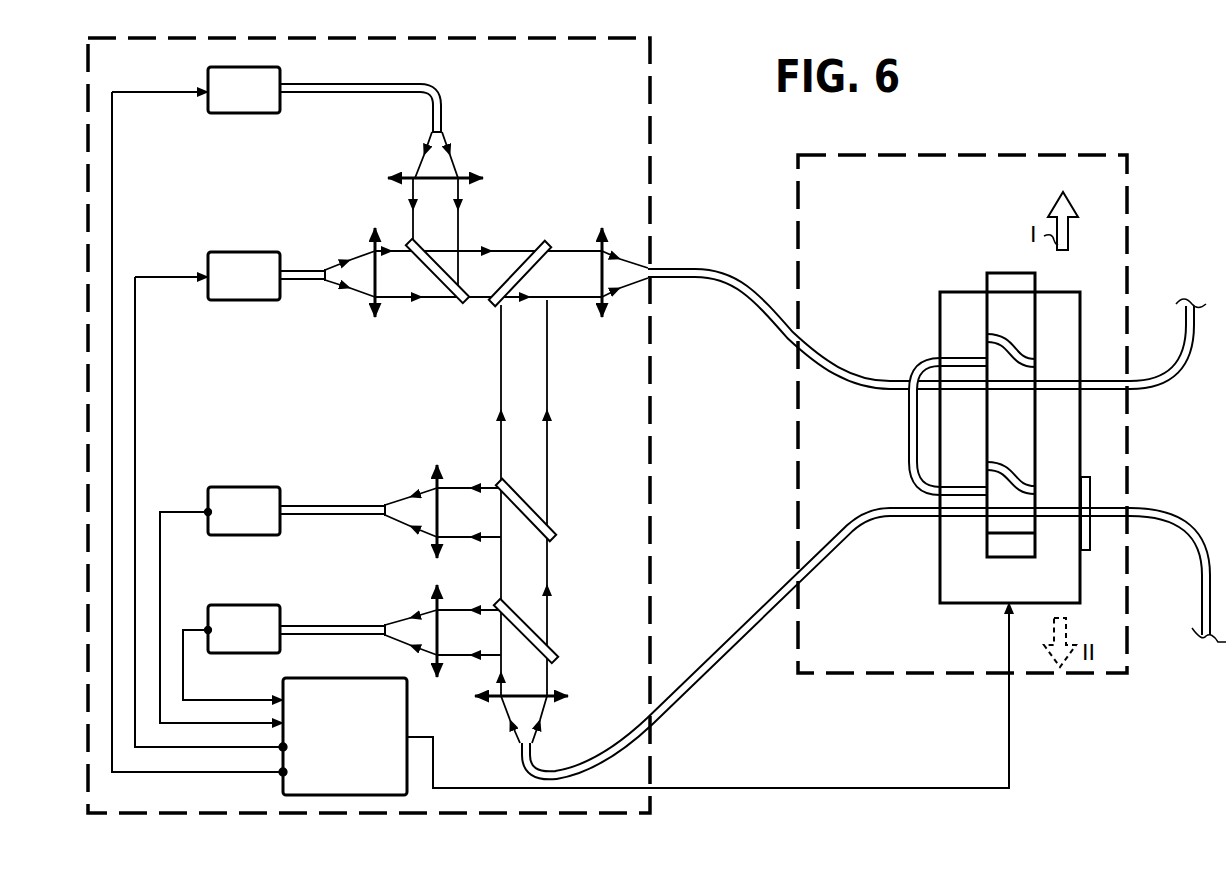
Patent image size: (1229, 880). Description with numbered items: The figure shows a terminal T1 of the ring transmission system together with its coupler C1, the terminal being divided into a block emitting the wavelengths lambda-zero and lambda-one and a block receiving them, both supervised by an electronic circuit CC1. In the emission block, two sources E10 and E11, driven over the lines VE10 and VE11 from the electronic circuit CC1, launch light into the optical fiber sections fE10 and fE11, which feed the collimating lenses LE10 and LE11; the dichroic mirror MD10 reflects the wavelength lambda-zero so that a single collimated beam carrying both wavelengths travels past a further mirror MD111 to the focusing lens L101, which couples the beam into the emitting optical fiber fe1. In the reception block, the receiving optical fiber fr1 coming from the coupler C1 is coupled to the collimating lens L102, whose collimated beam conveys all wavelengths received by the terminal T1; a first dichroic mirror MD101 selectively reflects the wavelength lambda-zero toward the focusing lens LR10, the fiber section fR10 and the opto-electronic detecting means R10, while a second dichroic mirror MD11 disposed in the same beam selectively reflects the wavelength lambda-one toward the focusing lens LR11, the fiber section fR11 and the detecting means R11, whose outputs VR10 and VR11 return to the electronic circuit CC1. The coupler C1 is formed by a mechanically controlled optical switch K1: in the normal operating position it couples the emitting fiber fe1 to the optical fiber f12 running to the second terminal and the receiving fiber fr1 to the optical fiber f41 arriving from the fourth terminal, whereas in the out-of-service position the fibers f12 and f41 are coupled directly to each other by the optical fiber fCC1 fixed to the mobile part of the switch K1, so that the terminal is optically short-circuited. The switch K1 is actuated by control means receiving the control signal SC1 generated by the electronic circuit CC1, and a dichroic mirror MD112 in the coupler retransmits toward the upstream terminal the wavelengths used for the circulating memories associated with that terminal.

The terminal T1 is at (650, 86).
The coupler C1 is at (854, 155).
The source E10 is at (262, 113).
The source E11 is at (262, 252).
The light source control line VE10 is at (186, 94).
The light source control line VE11 is at (196, 278).
The optical fiber section fE10 is at (384, 88).
The optical fiber section fE11 is at (302, 270).
The collimating lens LE10 is at (408, 178).
The collimating lens LE11 is at (368, 286).
The dichroic mirror MD10 is at (438, 288).
The dichroic mirror MD111 is at (528, 252).
The focusing lens L101 is at (598, 286).
The emitting optical fiber fe1 is at (736, 276).
The optical fiber f12 is at (1184, 348).
The opto-electronic detecting means R10 is at (260, 488).
The opto-electronic detecting means R11 is at (260, 606).
The receiver output line VR10 is at (196, 510).
The receiver output line VR11 is at (184, 666).
The optical fiber section fR10 is at (353, 510).
The optical fiber section fR11 is at (353, 630).
The focusing lens LR10 is at (432, 496).
The focusing lens LR11 is at (432, 616).
The dichroic mirror MD101 is at (544, 530).
The dichroic mirror MD11 is at (544, 650).
The collimating lens L102 is at (540, 692).
The receiving optical fiber fr1 is at (770, 610).
The optical fiber f41 is at (1196, 570).
The electronic circuit CC1 is at (408, 724).
The control signal SC1 is at (794, 788).
The optical fiber fCC1 is at (910, 454).
The mechanically controlled optical switch K1 is at (940, 576).
The dichroic mirror MD112 is at (1092, 496).